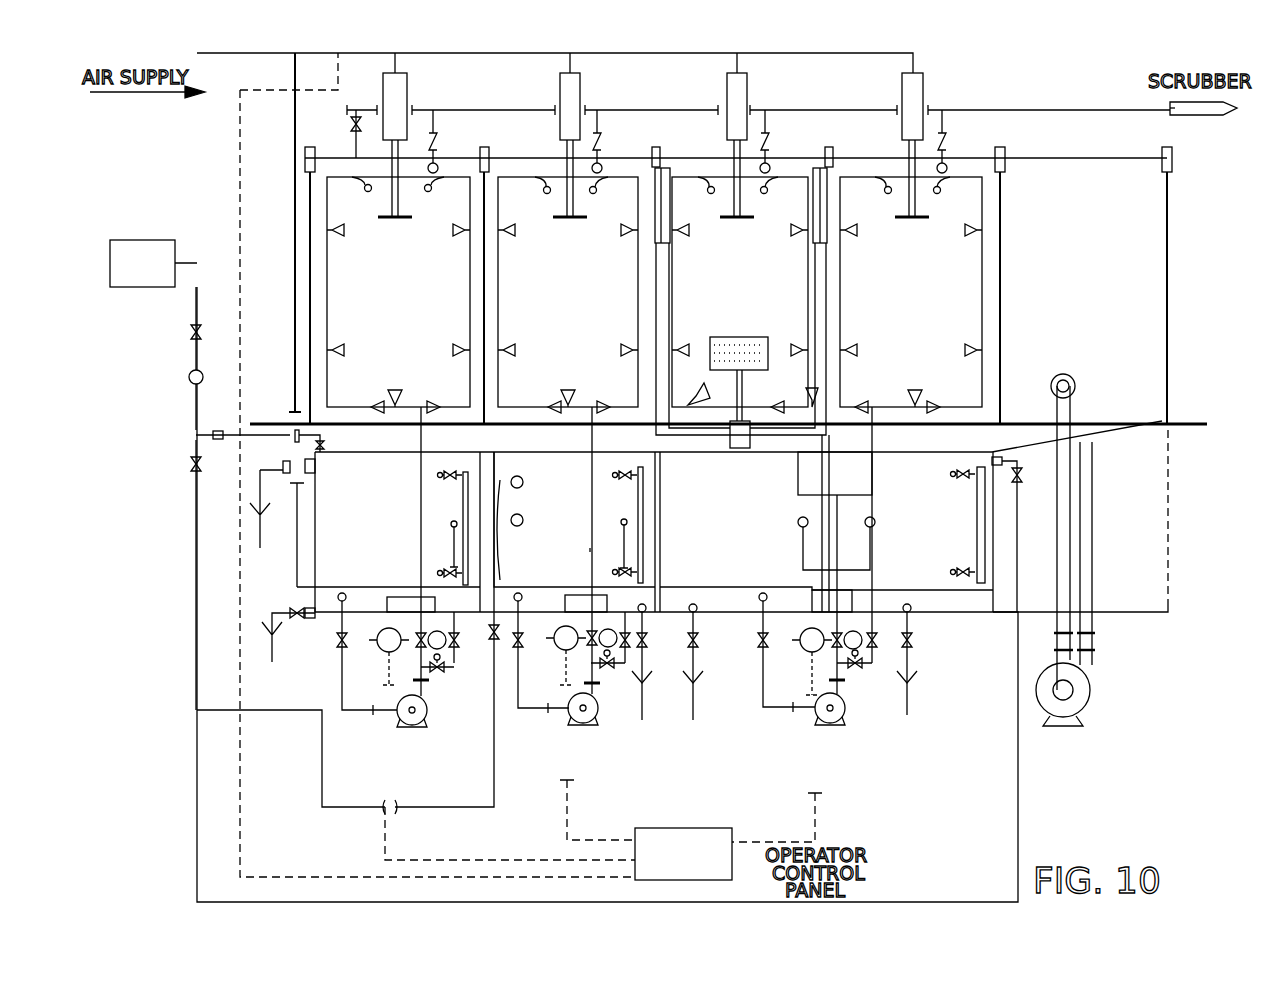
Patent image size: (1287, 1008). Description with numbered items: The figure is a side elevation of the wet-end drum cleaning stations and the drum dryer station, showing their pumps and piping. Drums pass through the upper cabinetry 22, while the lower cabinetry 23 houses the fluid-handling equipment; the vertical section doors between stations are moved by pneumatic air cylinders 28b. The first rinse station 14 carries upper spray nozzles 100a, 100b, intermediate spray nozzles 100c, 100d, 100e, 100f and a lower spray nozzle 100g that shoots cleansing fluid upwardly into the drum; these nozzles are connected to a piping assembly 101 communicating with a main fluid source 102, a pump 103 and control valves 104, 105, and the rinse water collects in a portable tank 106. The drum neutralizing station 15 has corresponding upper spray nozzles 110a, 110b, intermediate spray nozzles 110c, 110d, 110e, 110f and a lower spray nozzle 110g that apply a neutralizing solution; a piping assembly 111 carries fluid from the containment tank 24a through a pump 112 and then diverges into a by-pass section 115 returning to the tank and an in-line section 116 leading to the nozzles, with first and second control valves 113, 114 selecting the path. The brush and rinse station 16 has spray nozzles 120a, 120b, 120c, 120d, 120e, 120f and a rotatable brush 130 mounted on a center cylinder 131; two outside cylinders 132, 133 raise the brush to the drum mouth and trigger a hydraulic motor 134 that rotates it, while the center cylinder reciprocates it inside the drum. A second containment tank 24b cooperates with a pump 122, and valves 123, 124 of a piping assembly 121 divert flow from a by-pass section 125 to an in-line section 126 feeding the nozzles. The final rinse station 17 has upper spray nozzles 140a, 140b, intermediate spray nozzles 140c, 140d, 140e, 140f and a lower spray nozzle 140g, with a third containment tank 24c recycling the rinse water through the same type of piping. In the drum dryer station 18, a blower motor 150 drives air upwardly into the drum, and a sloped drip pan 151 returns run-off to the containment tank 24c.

The first rinse station 14 is at (335, 201).
The drum neutralizing station 15 is at (622, 142).
The brush and rinse station 16 is at (785, 142).
The final rinse station 17 is at (962, 142).
The drum dryer station 18 is at (1125, 157).
The upper cabinetry 22 is at (295, 330).
The lower cabinetry 23 is at (302, 526).
The containment tank 24a is at (575, 492).
The second containment tank 24b is at (743, 559).
The third containment tank 24c is at (948, 492).
The pneumatic air cylinder 28b is at (305, 166).
The spray nozzle 100a is at (364, 185).
The spray nozzle 100b is at (432, 185).
The spray nozzle 100c is at (341, 238).
The spray nozzle 100d is at (456, 238).
The spray nozzle 100e is at (341, 350).
The spray nozzle 100f is at (456, 350).
The lower spray nozzle 100g is at (395, 406).
The piping assembly 101 is at (327, 667).
The main fluid source 102 is at (125, 251).
The pump 103 is at (405, 707).
The control valve 104 is at (414, 642).
The control valve 105 is at (438, 673).
The portable tank 106 is at (392, 526).
The spray nozzle 110a is at (545, 193).
The spray nozzle 110b is at (595, 193).
The spray nozzle 110c is at (512, 236).
The spray nozzle 110d is at (624, 236).
The spray nozzle 110e is at (512, 348).
The spray nozzle 110f is at (624, 348).
The lower spray nozzle 110g is at (568, 407).
The piping assembly 111 is at (536, 720).
The pump 112 is at (602, 707).
The first control valve 113 is at (588, 642).
The second control valve 114 is at (606, 668).
The by-pass section 115 is at (632, 638).
The in-line section 116 is at (590, 548).
The spray nozzle 120a is at (709, 193).
The spray nozzle 120b is at (765, 193).
The spray nozzle 120c is at (686, 236).
The spray nozzle 120d is at (794, 236).
The spray nozzle 120e is at (686, 348).
The spray nozzle 120f is at (794, 348).
The piping assembly 121 is at (755, 680).
The pump 122 is at (832, 710).
The valve 123 is at (840, 640).
The valve 124 is at (853, 663).
The by-pass section 125 is at (873, 585).
The in-line section 126 is at (870, 520).
The brush 130 is at (740, 337).
The center cylinder 131 is at (744, 410).
The outside cylinder 132 is at (657, 200).
The outside cylinder 133 is at (820, 178).
The hydraulic motor 134 is at (735, 445).
The spray nozzle 140a is at (886, 193).
The spray nozzle 140b is at (938, 193).
The spray nozzle 140c is at (854, 236).
The spray nozzle 140d is at (968, 236).
The spray nozzle 140e is at (854, 350).
The spray nozzle 140f is at (968, 350).
The lower spray nozzle 140g is at (915, 405).
The blower motor 150 is at (1075, 691).
The drip pan 151 is at (1135, 432).